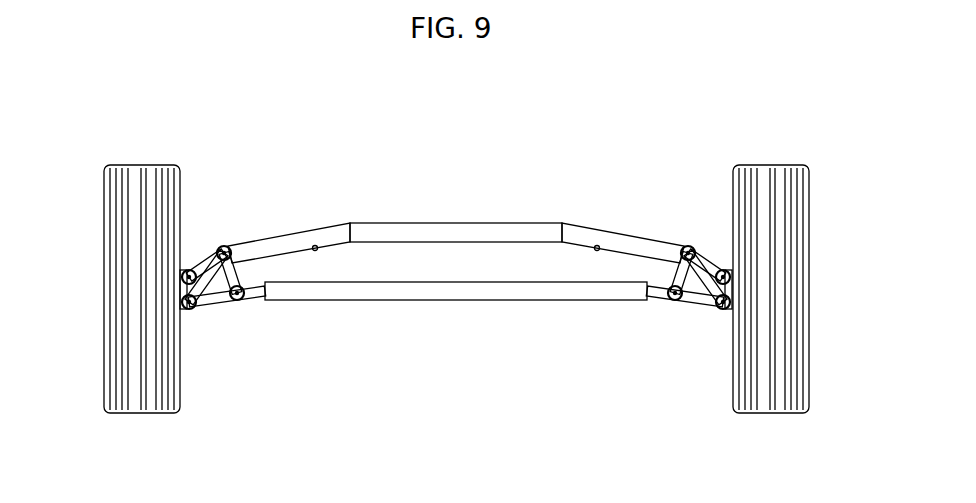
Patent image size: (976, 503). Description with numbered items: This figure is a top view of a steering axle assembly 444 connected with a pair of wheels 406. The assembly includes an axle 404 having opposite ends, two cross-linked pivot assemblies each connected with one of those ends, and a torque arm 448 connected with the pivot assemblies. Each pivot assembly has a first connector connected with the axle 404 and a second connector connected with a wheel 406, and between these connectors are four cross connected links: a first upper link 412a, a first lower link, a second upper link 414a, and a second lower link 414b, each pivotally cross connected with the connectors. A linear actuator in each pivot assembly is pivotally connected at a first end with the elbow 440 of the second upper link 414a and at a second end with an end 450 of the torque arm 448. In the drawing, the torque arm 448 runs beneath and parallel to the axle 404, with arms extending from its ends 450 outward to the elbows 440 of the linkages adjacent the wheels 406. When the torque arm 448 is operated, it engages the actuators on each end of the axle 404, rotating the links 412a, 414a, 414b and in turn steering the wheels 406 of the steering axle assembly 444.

The steering axle assembly 444 is at (140, 110).
The axle 404 is at (437, 232).
The wheel 406 is at (113, 332).
The torque arm 448 is at (465, 300).
The end of the torque arm 450 is at (643, 258).
The elbow 440 is at (232, 243).
The first upper link 412a is at (196, 308).
The second upper link 414a is at (208, 250).
The second lower link 414b is at (233, 300).